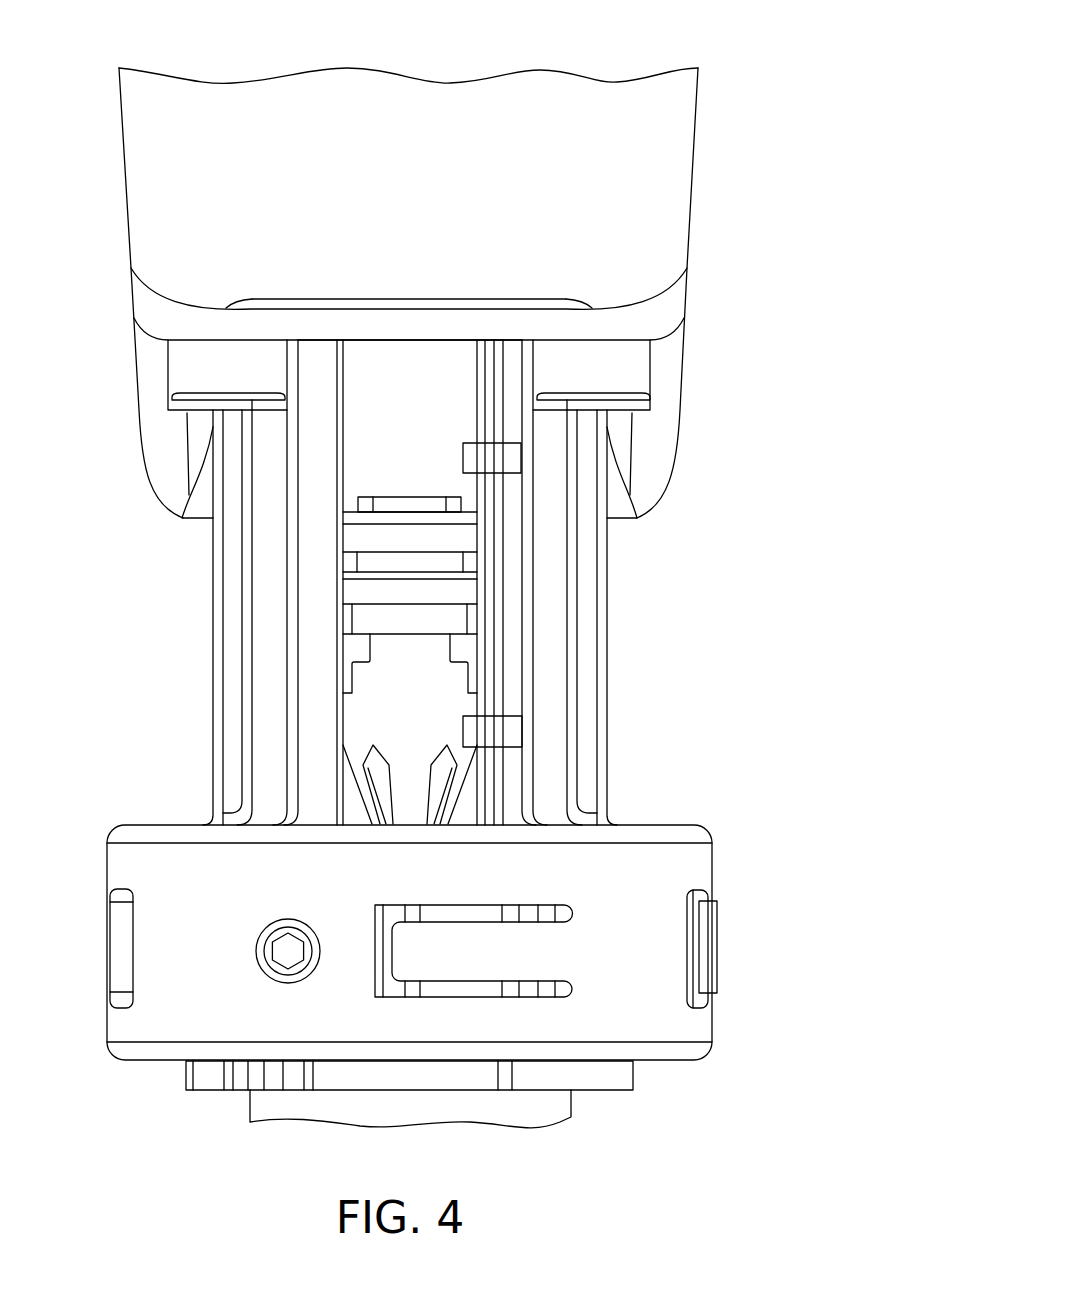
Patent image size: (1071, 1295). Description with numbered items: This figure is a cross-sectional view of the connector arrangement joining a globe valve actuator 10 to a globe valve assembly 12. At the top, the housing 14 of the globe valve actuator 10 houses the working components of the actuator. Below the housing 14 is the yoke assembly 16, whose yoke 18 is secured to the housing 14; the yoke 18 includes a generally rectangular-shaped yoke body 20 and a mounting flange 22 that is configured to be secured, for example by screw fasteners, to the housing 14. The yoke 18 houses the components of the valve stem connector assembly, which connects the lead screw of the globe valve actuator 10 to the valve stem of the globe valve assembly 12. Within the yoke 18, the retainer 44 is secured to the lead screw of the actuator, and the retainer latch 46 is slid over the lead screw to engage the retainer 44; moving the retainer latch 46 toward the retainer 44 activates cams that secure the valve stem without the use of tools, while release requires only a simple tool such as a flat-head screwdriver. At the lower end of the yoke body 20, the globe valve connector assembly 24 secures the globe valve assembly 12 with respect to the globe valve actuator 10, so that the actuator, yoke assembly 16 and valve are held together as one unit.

The globe valve actuator 10 is at (712, 82).
The globe valve assembly 12 is at (222, 1103).
The housing 14 is at (163, 167).
The yoke assembly 16 is at (178, 566).
The yoke 18 is at (605, 692).
The yoke body 20 is at (231, 700).
The mounting flange 22 is at (598, 365).
The globe valve connector assembly 24 is at (133, 1020).
The retainer 44 is at (486, 602).
The retainer latch 46 is at (378, 380).